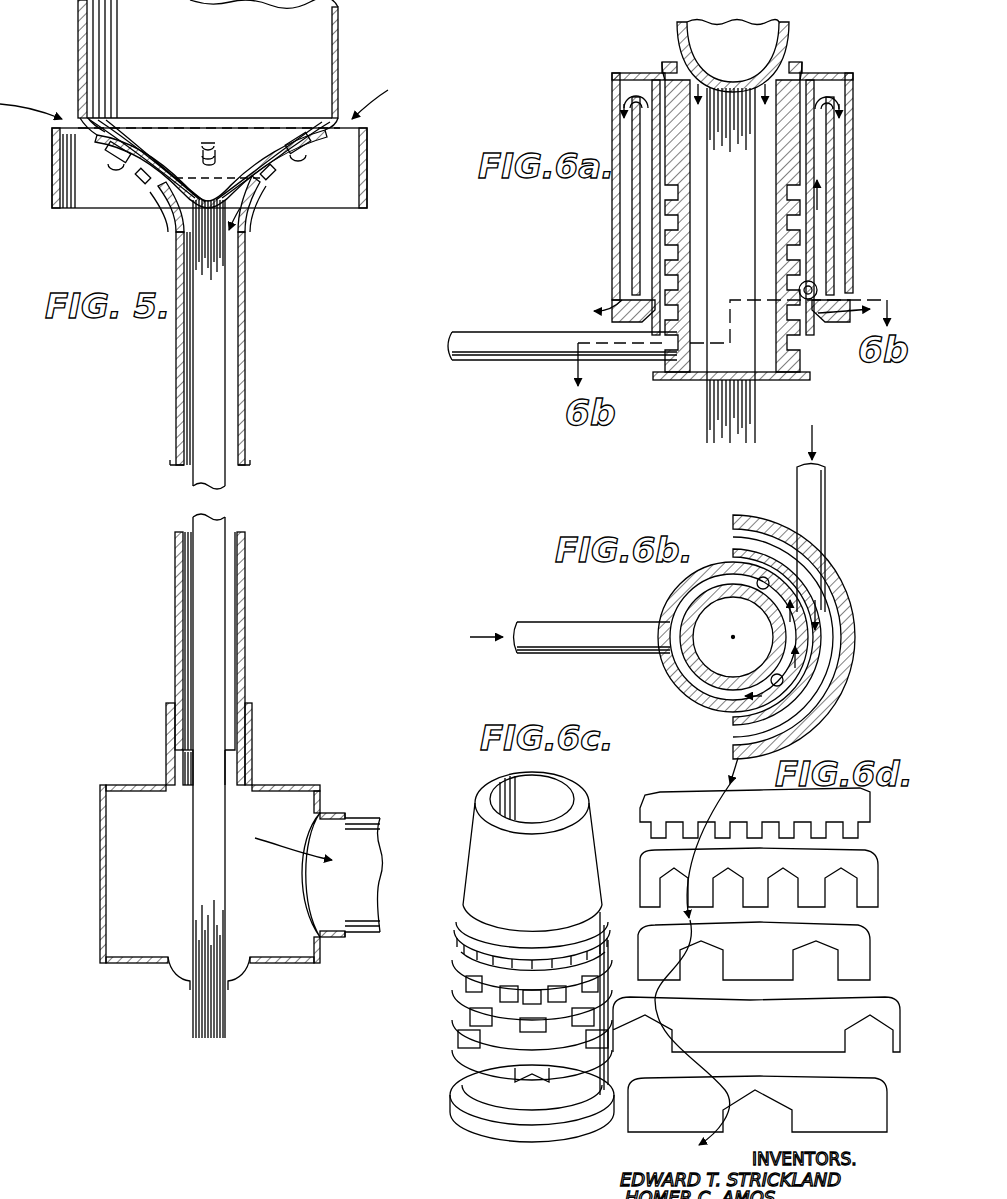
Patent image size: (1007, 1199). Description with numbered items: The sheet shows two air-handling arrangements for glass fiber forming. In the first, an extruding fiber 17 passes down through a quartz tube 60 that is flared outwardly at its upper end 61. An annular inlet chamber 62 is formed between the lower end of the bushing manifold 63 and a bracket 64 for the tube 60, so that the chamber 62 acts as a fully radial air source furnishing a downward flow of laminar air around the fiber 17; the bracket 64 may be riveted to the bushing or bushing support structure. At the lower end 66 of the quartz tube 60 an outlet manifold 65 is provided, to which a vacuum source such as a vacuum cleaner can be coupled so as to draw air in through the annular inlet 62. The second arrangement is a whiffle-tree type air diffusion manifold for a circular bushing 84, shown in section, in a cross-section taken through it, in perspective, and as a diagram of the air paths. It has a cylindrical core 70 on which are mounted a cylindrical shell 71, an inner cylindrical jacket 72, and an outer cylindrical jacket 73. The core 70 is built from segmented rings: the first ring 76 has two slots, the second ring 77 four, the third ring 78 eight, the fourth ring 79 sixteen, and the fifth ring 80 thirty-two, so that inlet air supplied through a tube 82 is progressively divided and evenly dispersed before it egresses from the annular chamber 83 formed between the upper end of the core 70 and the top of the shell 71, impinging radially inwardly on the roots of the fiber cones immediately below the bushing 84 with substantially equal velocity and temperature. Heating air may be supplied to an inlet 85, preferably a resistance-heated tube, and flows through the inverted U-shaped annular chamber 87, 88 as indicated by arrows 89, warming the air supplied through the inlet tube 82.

In FIG. 5, the extruding fiber 17 is at (232, 356).
In FIG. 6A, the extruding fiber 17 is at (731, 265).
In FIG. 5, the quartz tube 60 is at (250, 295).
In FIG. 5, the upper end 61 is at (262, 202).
In FIG. 5, the annular inlet chamber 62 is at (259, 153).
In FIG. 5, the bushing manifold 63 is at (338, 78).
In FIG. 5, the bracket 64 is at (367, 163).
In FIG. 5, the outlet manifold 65 is at (282, 785).
In FIG. 5, the lower end 66 is at (246, 700).
In FIG. 6A, the cylindrical core 70 is at (795, 85).
In FIG. 6B, the cylindrical core 70 is at (784, 638).
In FIG. 6C, the cylindrical core 70 is at (584, 792).
In FIG. 6A, the cylindrical shell 71 is at (812, 86).
In FIG. 6B, the cylindrical shell 71 is at (675, 676).
In FIG. 6A, the inner cylindrical jacket 72 is at (835, 127).
In FIG. 6B, the inner cylindrical jacket 72 is at (825, 705).
In FIG. 6A, the outer cylindrical jacket 73 is at (852, 160).
In FIG. 6B, the outer cylindrical jacket 73 is at (838, 690).
In FIG. 6A, the first ring 76 is at (667, 327).
In FIG. 6C, the first ring 76 is at (485, 1053).
In FIG. 6D, the first ring 76 is at (826, 1103).
In FIG. 6A, the second ring 77 is at (663, 300).
In FIG. 6C, the second ring 77 is at (468, 1028).
In FIG. 6D, the second ring 77 is at (838, 1022).
In FIG. 6A, the third ring 78 is at (663, 270).
In FIG. 6C, the third ring 78 is at (470, 1000).
In FIG. 6D, the third ring 78 is at (850, 948).
In FIG. 6A, the fourth ring 79 is at (663, 240).
In FIG. 6C, the fourth ring 79 is at (466, 964).
In FIG. 6D, the fourth ring 79 is at (862, 866).
In FIG. 6A, the fifth ring 80 is at (668, 212).
In FIG. 6C, the fifth ring 80 is at (468, 928).
In FIG. 6D, the fifth ring 80 is at (678, 812).
In FIG. 6A, the inlet tube 82 is at (525, 345).
In FIG. 6B, the inlet tube 82 is at (598, 628).
In FIG. 6A, the annular chamber 83 is at (672, 82).
In FIG. 6A, the bushing 84 is at (793, 40).
In FIG. 6A, the inlet tube 85 is at (809, 300).
In FIG. 6B, the inlet tube 85 is at (812, 530).
In FIG. 6A, the annular chamber 87 is at (838, 202).
In FIG. 6B, the annular chamber 87 is at (835, 602).
In FIG. 6A, the annular chamber 88 is at (818, 225).
In FIG. 6B, the annular chamber 88 is at (820, 657).
In FIG. 6A, the arrows 89 is at (634, 98).